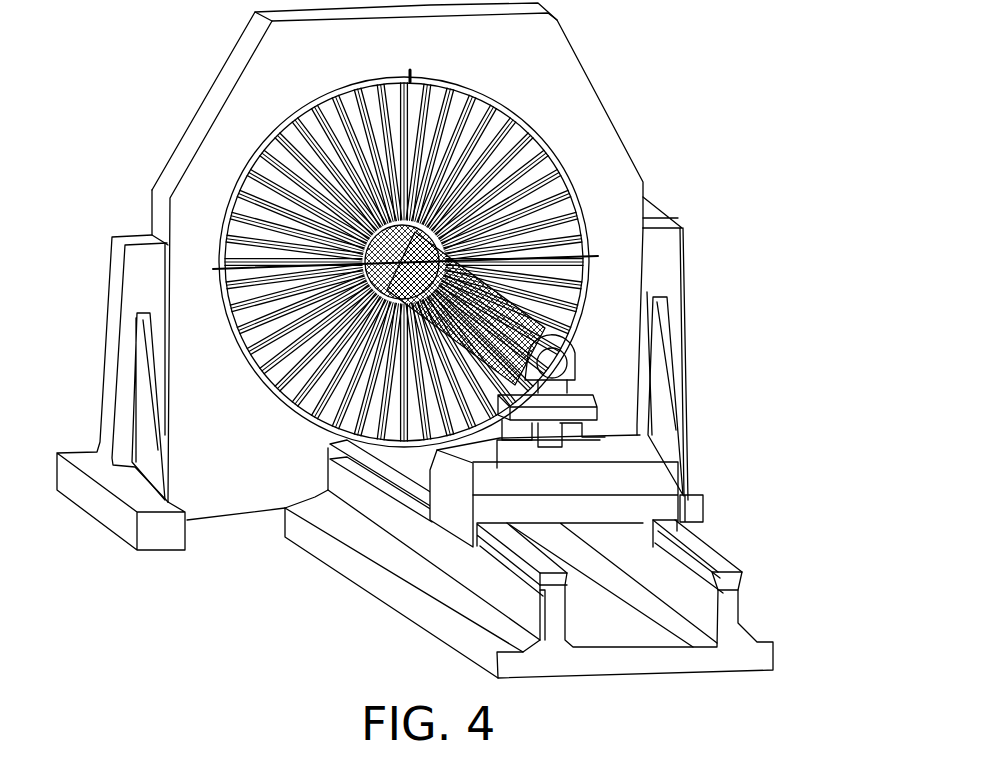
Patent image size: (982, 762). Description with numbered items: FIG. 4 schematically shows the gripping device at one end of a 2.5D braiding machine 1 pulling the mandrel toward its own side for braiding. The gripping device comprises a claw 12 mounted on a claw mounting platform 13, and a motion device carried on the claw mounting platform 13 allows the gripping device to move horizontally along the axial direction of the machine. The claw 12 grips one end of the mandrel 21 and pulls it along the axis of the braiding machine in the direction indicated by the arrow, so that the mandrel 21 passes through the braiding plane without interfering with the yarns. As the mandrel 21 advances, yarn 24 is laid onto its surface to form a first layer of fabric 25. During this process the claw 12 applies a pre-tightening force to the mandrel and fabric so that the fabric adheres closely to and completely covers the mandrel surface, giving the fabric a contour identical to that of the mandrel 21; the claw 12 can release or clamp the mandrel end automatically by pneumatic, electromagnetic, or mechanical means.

The 2.5D braiding machine 1 is at (227, 113).
The yarn 24 is at (560, 155).
The first layer of fabric 25 is at (587, 270).
The claw 12 is at (552, 363).
The mandrel 21 is at (570, 380).
The claw mounting platform 13 is at (506, 452).